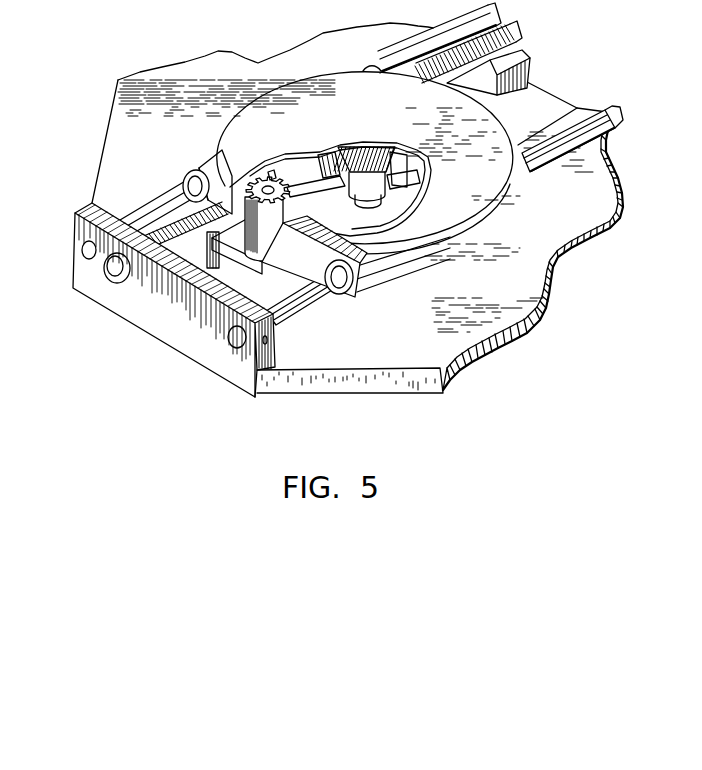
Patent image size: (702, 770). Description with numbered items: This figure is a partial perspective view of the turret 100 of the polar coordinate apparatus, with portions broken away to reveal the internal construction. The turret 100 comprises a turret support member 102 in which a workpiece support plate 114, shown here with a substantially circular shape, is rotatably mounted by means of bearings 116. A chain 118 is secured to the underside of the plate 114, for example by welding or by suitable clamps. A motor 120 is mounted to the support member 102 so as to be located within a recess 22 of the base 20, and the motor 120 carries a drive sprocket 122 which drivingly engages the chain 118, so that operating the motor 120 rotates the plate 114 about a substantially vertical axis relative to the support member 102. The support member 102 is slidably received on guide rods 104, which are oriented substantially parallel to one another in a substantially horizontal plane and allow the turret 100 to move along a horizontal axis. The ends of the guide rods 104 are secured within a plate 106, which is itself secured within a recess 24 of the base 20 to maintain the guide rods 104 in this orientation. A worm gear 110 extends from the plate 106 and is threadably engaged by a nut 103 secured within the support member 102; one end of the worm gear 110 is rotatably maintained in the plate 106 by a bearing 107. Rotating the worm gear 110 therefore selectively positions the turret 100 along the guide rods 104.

The turret 100 is at (313, 67).
The base 20 is at (180, 134).
The recess 22 is at (282, 284).
The recess 24 is at (283, 366).
The turret support member 102 is at (397, 273).
The nut 103 is at (212, 240).
The guide rods 104 is at (178, 183).
The plate 106 is at (178, 312).
The bearing 107 is at (113, 285).
The worm gear 110 is at (160, 197).
The workpiece support plate 114 is at (390, 102).
The bearings 116 is at (430, 162).
The chain 118 is at (270, 172).
The motor 120 is at (349, 284).
The drive sprocket 122 is at (300, 208).